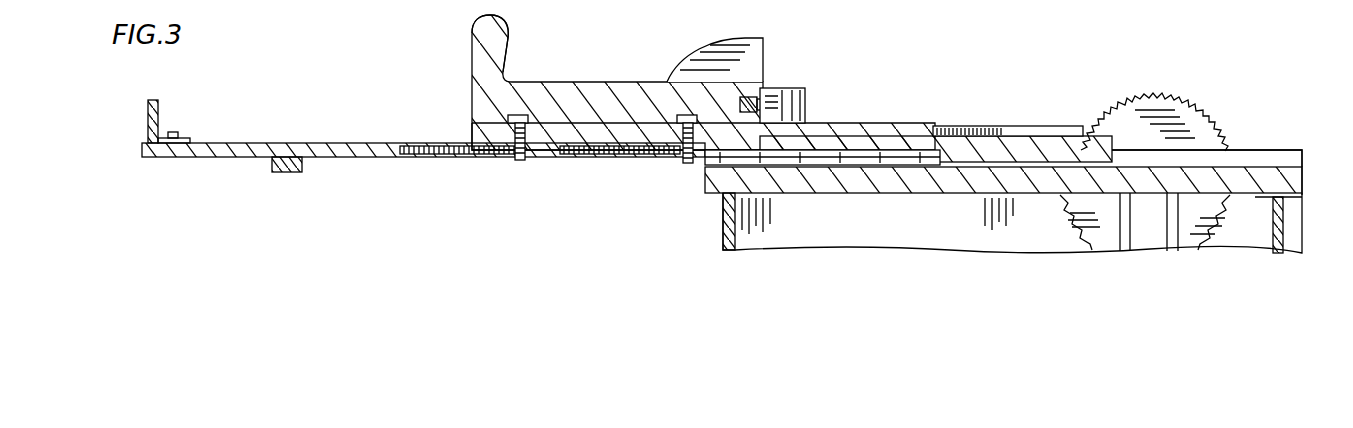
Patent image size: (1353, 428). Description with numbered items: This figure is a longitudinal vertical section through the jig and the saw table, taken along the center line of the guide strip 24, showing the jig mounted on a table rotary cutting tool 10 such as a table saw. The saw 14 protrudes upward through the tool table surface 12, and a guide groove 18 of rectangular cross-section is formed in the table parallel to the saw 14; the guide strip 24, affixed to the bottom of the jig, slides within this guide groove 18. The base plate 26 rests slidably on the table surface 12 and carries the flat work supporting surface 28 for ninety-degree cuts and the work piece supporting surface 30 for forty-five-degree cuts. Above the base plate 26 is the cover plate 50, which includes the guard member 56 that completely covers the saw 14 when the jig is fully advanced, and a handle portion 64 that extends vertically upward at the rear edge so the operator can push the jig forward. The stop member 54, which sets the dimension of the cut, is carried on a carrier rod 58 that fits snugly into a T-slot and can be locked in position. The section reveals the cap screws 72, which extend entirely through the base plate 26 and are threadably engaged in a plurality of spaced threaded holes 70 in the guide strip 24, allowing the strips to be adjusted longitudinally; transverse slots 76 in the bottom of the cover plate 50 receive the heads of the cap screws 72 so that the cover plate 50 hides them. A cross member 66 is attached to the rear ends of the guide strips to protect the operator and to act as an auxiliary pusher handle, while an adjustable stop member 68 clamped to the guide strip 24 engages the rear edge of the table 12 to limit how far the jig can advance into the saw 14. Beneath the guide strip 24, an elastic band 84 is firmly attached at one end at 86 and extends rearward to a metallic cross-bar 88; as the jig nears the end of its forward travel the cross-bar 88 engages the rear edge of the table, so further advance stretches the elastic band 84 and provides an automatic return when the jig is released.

The table rotary cutting tool 10 is at (682, 165).
The tool table surface 12 is at (1026, 172).
The saw 14 is at (1208, 92).
The guide groove 18 is at (1302, 160).
The guide strip 24 is at (349, 158).
The base plate 26 is at (472, 135).
The work supporting surface 28 is at (915, 125).
The work piece supporting surface 30 is at (1002, 126).
The cover plate 50 is at (672, 78).
The stop member 54 is at (806, 104).
The guard member 56 is at (752, 42).
The carrier rod 58 is at (757, 97).
The handle portion 64 is at (472, 35).
The cross member 66 is at (148, 112).
The adjustable stop member 68 is at (282, 172).
The threaded holes 70 is at (520, 164).
The cap screws 72 is at (518, 125).
The transverse slots 76 is at (518, 118).
The elastic bands 84 is at (836, 167).
The attachment point of elastic band 86 is at (906, 168).
The metallic cross-bar 88 is at (723, 228).